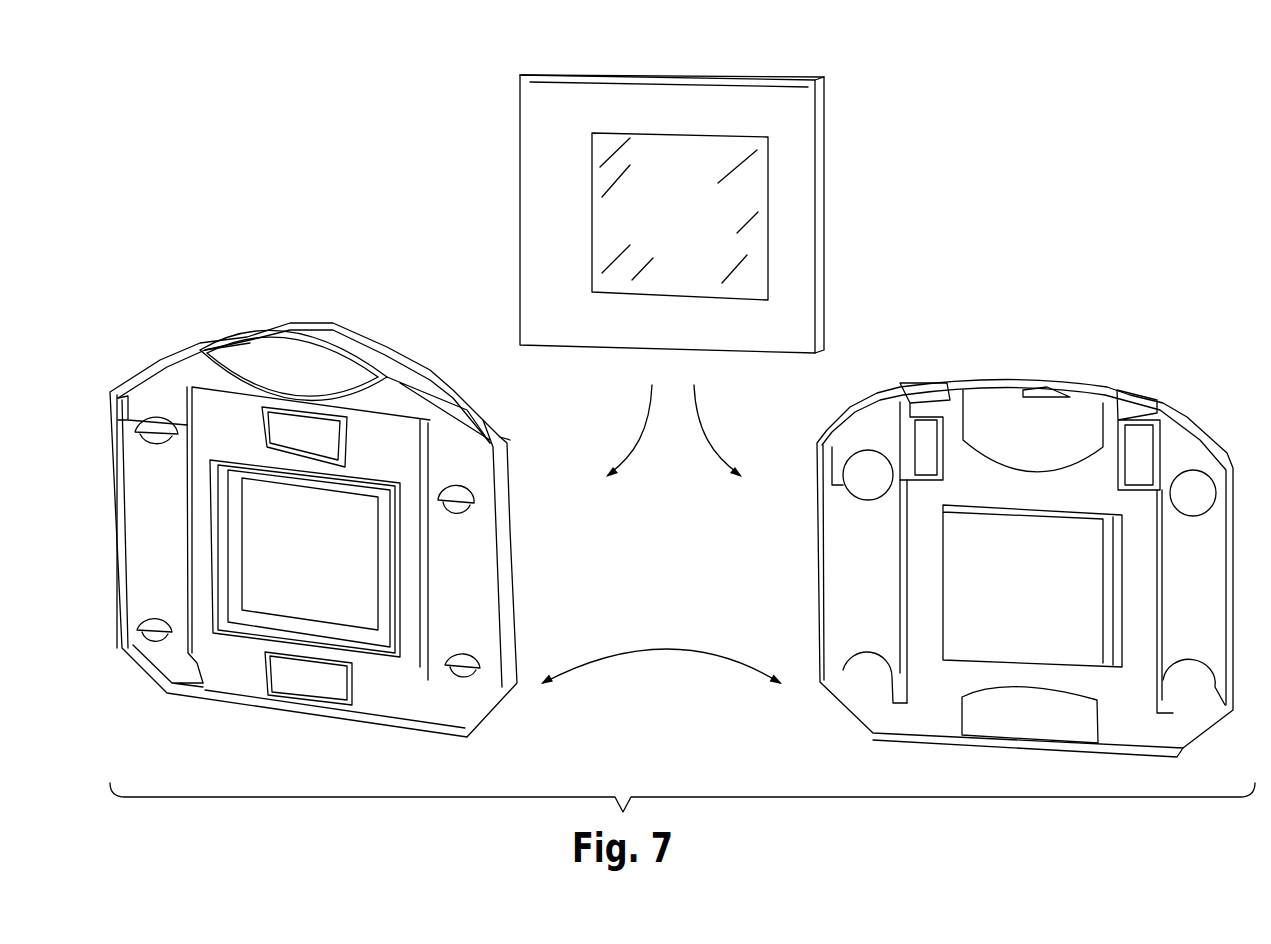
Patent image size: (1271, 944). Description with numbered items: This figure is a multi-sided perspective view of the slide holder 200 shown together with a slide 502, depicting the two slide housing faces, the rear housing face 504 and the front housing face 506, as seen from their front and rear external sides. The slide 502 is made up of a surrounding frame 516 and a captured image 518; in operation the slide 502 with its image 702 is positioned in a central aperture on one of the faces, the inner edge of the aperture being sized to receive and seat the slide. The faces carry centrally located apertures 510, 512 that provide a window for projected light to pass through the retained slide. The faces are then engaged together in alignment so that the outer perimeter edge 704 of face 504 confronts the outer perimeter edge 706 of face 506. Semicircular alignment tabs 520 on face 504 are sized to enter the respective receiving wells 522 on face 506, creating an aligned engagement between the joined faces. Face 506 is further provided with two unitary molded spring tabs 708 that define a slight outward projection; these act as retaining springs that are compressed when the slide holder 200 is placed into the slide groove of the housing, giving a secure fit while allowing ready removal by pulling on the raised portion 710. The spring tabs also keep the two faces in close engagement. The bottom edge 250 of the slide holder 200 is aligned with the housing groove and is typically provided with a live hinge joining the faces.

The slide 502 is at (800, 57).
The surrounding frame 516 is at (812, 107).
The captured image 518 is at (752, 179).
The image 702 is at (687, 230).
The slide holder 200 is at (1022, 248).
The outer perimeter edge 704 is at (483, 417).
The rear housing face 504 is at (113, 438).
The aperture 510 is at (316, 563).
The alignment tabs 520 is at (148, 457).
The outer perimeter edge 706 is at (840, 414).
The spring tabs 708 is at (923, 435).
The raised portion 710 is at (1050, 383).
The front housing face 506 is at (1103, 390).
The aperture 512 is at (1030, 586).
The receiving wells 522 is at (868, 465).
The bottom edge 250 is at (933, 747).